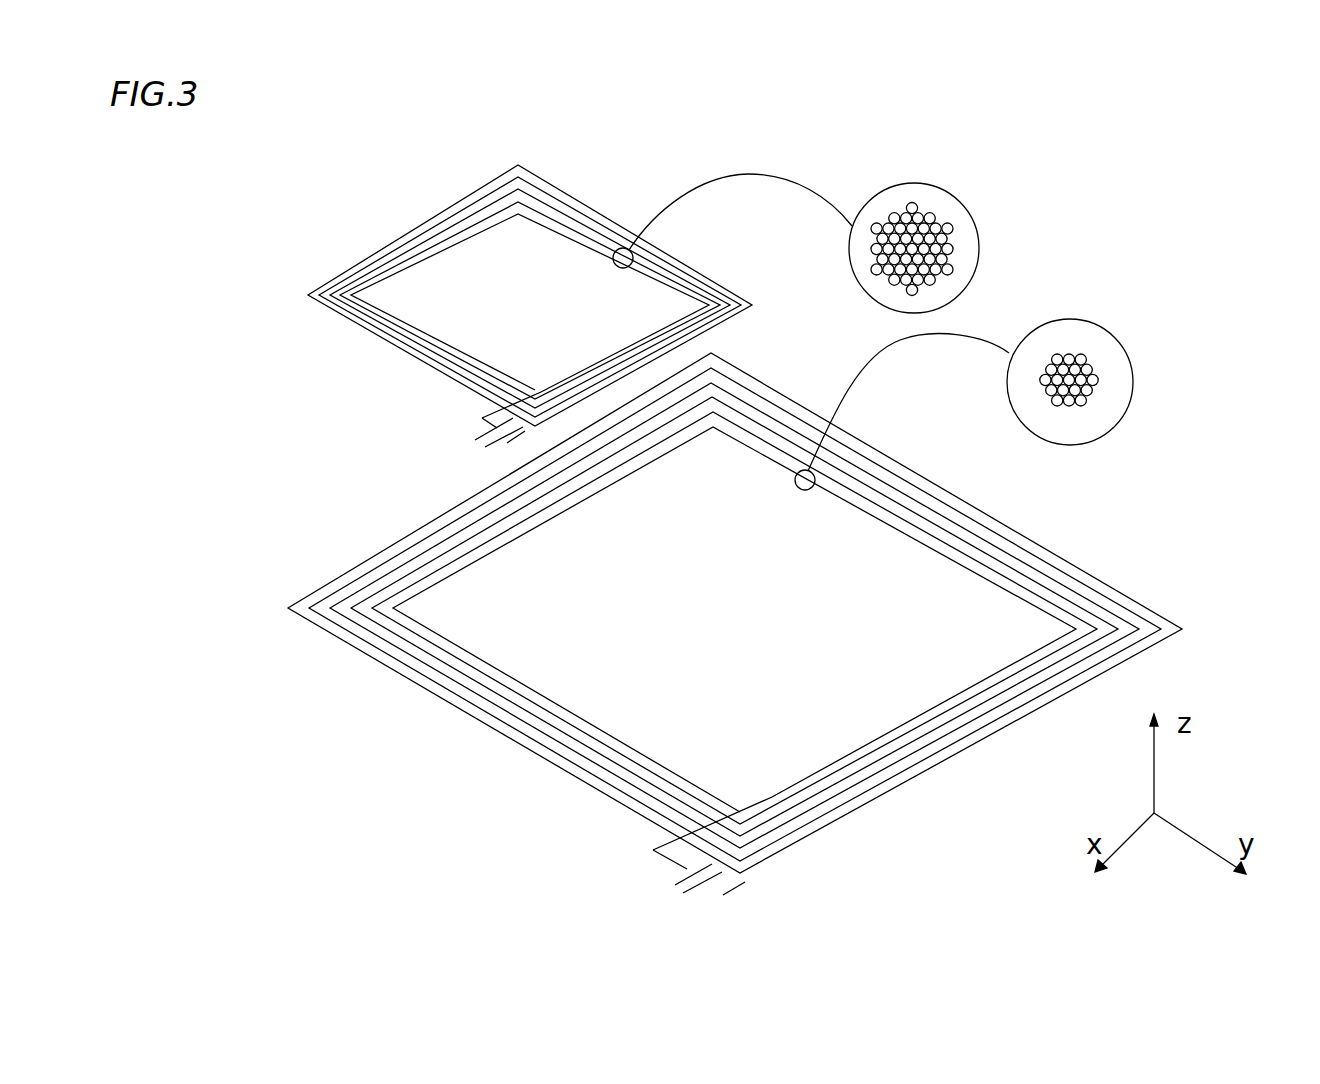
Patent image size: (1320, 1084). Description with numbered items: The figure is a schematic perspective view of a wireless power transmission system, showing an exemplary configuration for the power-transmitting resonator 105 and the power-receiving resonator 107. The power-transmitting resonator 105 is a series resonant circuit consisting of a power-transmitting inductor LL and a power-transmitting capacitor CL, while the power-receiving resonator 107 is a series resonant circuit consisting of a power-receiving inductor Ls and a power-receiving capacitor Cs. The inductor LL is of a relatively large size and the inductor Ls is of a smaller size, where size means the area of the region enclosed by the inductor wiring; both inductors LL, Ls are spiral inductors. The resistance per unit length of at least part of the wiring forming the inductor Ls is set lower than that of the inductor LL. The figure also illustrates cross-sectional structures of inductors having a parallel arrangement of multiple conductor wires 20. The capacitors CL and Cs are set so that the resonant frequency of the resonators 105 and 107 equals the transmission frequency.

The power-receiving resonator 107 is at (488, 313).
The power-receiving inductor Ls is at (392, 347).
The power-receiving capacitor Cs is at (440, 431).
The power-transmitting resonator 105 is at (735, 635).
The power-transmitting inductor LL is at (467, 713).
The power-transmitting capacitor CL is at (653, 875).
The conductor wires 20 is at (951, 247).